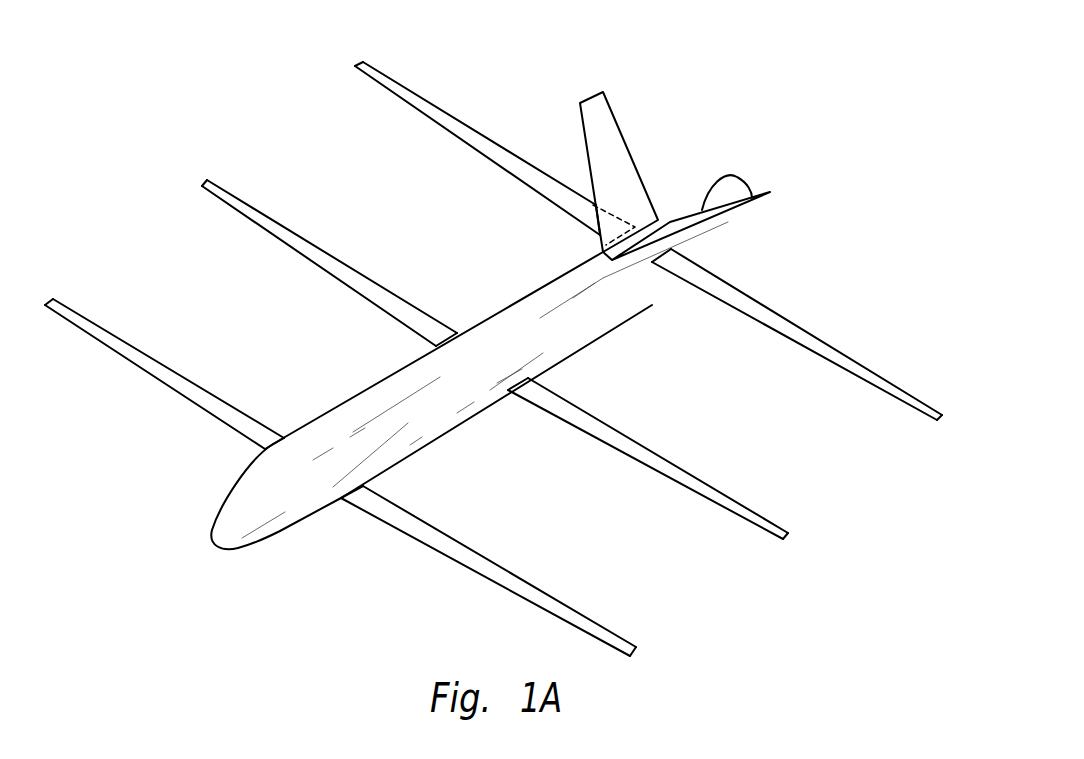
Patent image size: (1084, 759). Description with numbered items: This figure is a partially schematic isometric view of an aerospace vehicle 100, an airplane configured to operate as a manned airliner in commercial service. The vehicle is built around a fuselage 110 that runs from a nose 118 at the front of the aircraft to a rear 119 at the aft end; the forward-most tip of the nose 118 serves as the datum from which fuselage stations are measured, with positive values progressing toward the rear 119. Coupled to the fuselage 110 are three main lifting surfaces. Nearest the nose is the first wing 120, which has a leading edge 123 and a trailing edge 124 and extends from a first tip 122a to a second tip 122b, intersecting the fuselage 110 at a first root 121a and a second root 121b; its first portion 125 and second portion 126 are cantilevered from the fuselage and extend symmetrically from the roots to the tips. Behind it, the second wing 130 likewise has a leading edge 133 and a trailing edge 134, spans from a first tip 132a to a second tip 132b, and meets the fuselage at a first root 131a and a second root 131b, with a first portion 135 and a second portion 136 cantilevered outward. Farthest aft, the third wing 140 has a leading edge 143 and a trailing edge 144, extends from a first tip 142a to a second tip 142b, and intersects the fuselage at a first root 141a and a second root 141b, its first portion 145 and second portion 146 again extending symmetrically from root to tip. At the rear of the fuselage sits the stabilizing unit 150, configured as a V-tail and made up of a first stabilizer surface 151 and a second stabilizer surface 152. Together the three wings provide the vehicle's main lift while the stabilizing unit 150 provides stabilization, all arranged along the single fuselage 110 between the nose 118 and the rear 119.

The aerospace vehicle 100 is at (787, 92).
The fuselage 110 is at (282, 533).
The nose 118 is at (190, 539).
The rear 119 is at (750, 170).
The first wing 120 is at (153, 360).
The first root of the first wing 121a is at (341, 499).
The second root of the first wing 121b is at (266, 449).
The first tip of the first wing 122a is at (637, 656).
The second tip of the first wing 122b is at (47, 300).
The leading edge of the first wing 123 is at (172, 389).
The trailing edge of the first wing 124 is at (225, 400).
The first portion of the first wing 125 is at (552, 598).
The second portion of the first wing 126 is at (125, 358).
The second wing 130 is at (400, 298).
The first root of the second wing 131a is at (506, 394).
The second root of the second wing 131b is at (434, 344).
The first tip of the second wing 132a is at (788, 537).
The second tip of the second wing 132b is at (204, 182).
The leading edge of the second wing 133 is at (356, 292).
The trailing edge of the second wing 134 is at (283, 224).
The first portion of the second wing 135 is at (707, 485).
The second portion of the second wing 136 is at (306, 257).
The third wing 140 is at (512, 160).
The first root of the third wing 141a is at (653, 264).
The second root of the third wing 141b is at (600, 238).
The first tip of the third wing 142a is at (942, 418).
The second tip of the third wing 142b is at (358, 62).
The leading edge of the third wing 143 is at (489, 158).
The trailing edge of the third wing 144 is at (480, 132).
The first portion of the third wing 145 is at (857, 366).
The second portion of the third wing 146 is at (437, 121).
The stabilizing unit 150 is at (657, 170).
The first stabilizer surface 151 is at (762, 187).
The second stabilizer surface 152 is at (604, 128).